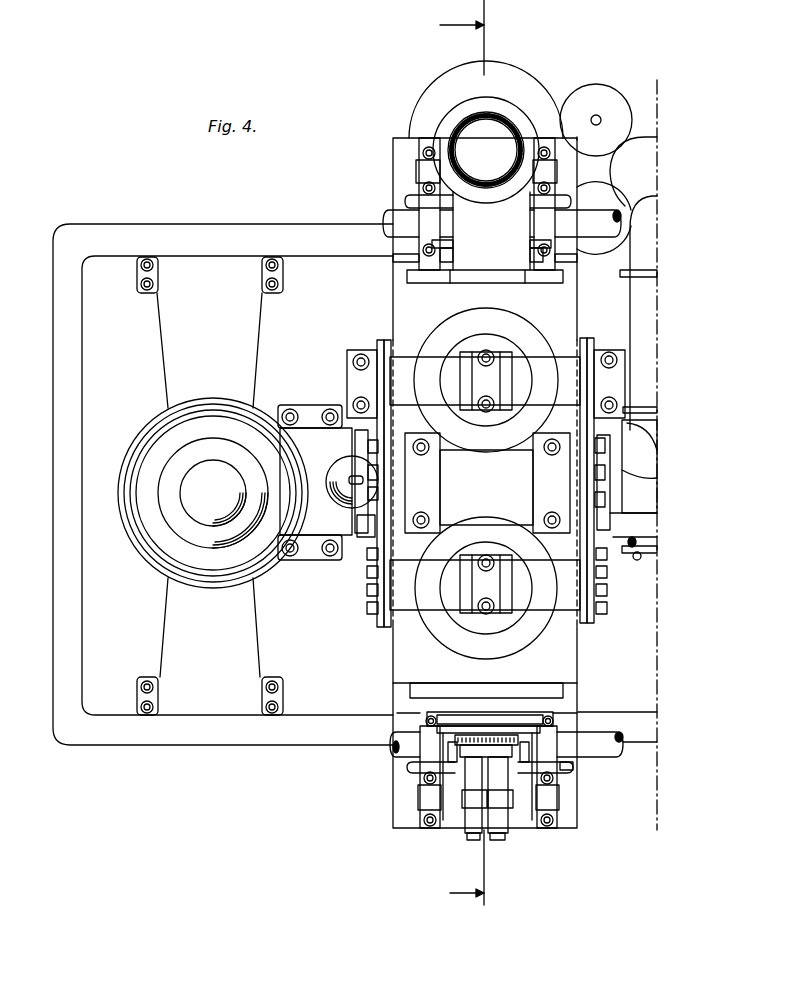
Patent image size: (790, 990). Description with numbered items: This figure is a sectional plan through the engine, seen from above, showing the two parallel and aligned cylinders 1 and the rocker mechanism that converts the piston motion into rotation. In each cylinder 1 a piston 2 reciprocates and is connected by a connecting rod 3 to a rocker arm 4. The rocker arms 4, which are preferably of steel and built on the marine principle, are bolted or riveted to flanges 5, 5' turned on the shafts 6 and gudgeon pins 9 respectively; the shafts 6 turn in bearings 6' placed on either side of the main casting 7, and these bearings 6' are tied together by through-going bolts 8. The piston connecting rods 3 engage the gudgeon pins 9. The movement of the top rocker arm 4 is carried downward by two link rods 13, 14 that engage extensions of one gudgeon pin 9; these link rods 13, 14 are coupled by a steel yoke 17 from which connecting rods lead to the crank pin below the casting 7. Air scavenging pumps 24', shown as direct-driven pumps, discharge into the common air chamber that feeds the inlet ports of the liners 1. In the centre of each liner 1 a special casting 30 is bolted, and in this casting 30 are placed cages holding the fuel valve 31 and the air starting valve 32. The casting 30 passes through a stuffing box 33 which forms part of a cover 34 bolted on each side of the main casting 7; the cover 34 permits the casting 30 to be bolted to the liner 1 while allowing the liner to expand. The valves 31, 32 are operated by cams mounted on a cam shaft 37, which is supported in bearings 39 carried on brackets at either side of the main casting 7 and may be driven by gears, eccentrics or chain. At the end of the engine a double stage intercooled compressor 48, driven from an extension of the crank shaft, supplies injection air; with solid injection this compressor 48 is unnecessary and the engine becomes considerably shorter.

The cylinder 1 is at (490, 322).
The piston 2 is at (468, 467).
The connecting rod 3 is at (490, 590).
The rocker arm 4 is at (346, 376).
The flange 5 is at (484, 483).
The flange 5' is at (481, 482).
The shaft 6 is at (486, 487).
The bearing 6' is at (406, 482).
The main casting 7 is at (485, 483).
The through-going bolt 8 is at (421, 452).
The gudgeon pin 9 is at (350, 378).
The link rod 13 is at (348, 474).
The link rod 14 is at (612, 432).
The yoke 17 is at (360, 496).
The air scavenging pump 24' is at (472, 132).
The casting 30 is at (426, 719).
The fuel valve 31 is at (500, 820).
The air starting valve 32 is at (477, 818).
The stuffing box 33 is at (393, 256).
The cover 34 is at (408, 277).
The cam shaft 37 is at (380, 773).
The bearing 39 is at (416, 172).
The compressor 48 is at (196, 488).